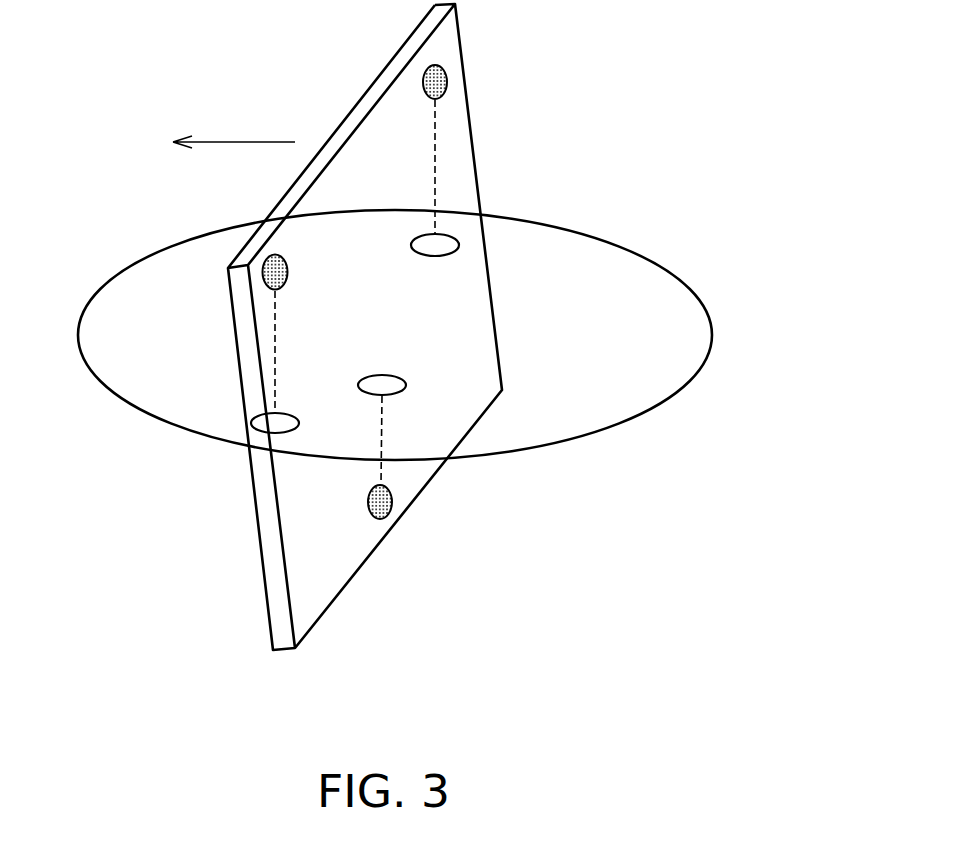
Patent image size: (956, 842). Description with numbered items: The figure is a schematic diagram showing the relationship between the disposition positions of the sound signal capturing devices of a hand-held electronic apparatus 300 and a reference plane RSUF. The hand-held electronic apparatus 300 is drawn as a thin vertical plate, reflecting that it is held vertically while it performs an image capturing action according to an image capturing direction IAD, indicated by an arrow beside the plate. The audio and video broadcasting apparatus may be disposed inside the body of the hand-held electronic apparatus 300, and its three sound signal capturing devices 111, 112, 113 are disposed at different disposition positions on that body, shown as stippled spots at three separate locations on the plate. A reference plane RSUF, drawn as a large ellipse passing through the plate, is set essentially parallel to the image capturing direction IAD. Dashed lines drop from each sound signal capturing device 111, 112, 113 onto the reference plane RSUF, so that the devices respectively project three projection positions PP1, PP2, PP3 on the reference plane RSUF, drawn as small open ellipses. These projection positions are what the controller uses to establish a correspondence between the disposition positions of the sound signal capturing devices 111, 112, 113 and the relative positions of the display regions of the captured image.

The hand-held electronic apparatus 300 is at (328, 587).
The reference plane RSUF is at (660, 245).
The image capturing direction IAD is at (234, 125).
The sound signal capturing device 111 is at (272, 258).
The sound signal capturing device 112 is at (447, 84).
The sound signal capturing device 113 is at (388, 513).
The projection position PP1 is at (287, 430).
The projection position PP2 is at (447, 243).
The projection position PP3 is at (393, 387).